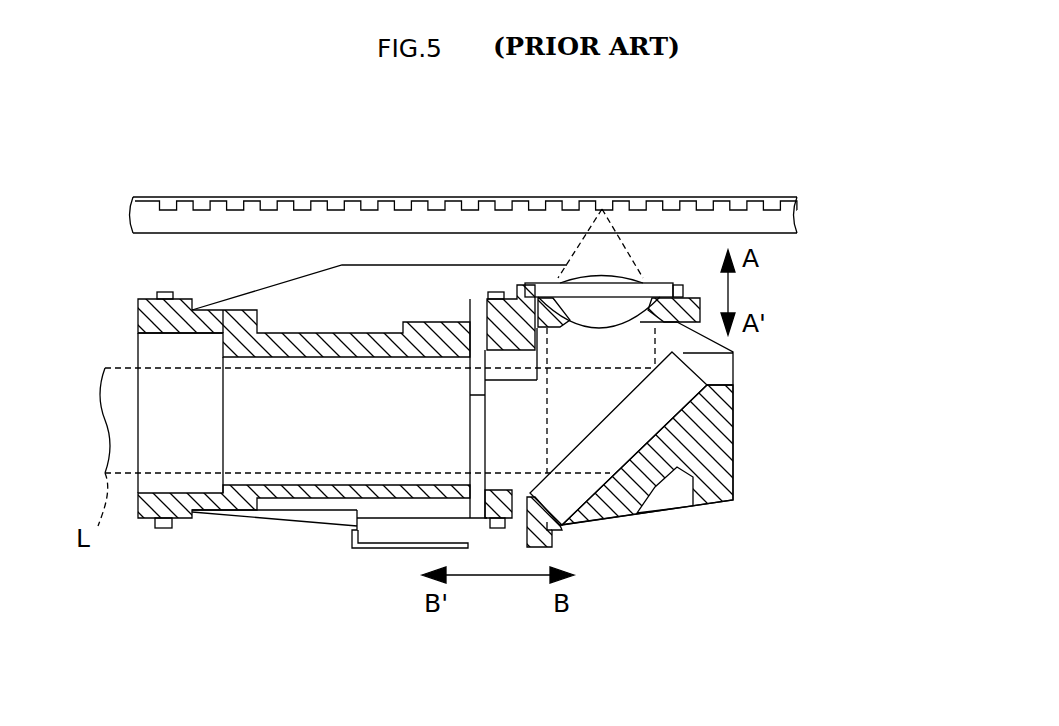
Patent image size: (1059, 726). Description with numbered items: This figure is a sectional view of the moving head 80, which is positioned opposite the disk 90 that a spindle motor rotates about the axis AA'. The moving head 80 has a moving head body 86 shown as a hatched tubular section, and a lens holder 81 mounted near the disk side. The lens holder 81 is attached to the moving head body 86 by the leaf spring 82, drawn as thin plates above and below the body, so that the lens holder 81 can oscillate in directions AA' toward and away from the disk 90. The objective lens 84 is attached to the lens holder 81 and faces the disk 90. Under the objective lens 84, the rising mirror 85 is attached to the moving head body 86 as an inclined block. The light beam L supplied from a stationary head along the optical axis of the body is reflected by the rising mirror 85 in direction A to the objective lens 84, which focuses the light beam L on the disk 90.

The moving head 80 is at (738, 446).
The lens holder 81 is at (513, 308).
The leaf spring 82 is at (313, 299).
The objective lens 84 is at (602, 308).
The rising mirror 85 is at (617, 445).
The moving head body 86 is at (140, 305).
The disk 90 is at (793, 212).